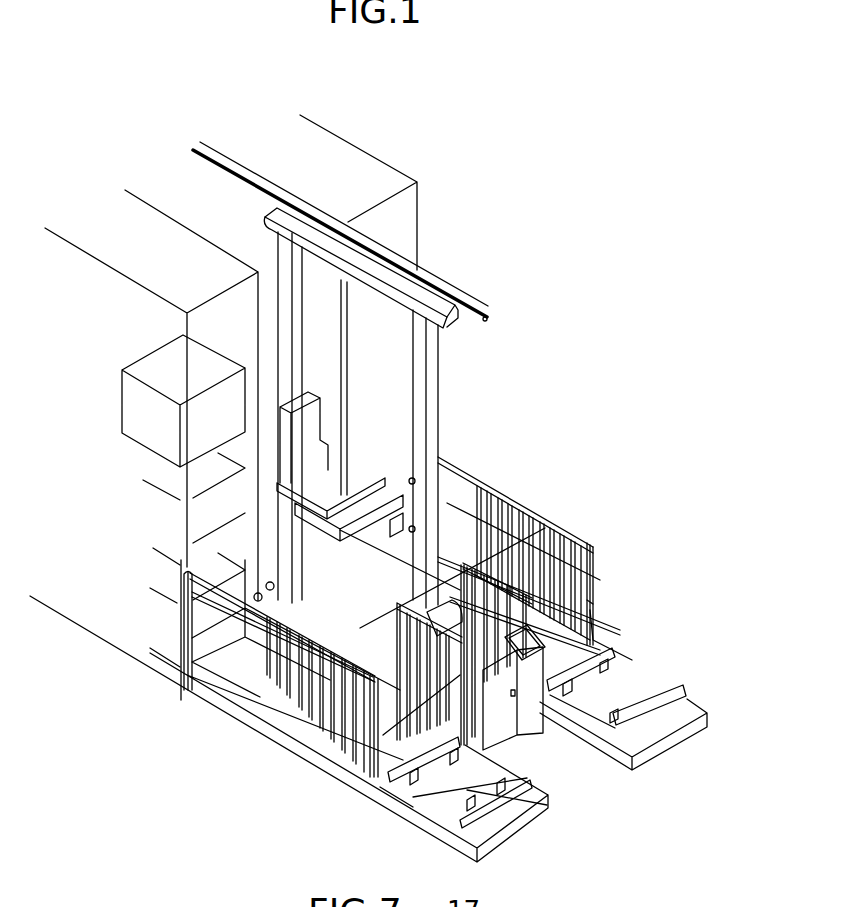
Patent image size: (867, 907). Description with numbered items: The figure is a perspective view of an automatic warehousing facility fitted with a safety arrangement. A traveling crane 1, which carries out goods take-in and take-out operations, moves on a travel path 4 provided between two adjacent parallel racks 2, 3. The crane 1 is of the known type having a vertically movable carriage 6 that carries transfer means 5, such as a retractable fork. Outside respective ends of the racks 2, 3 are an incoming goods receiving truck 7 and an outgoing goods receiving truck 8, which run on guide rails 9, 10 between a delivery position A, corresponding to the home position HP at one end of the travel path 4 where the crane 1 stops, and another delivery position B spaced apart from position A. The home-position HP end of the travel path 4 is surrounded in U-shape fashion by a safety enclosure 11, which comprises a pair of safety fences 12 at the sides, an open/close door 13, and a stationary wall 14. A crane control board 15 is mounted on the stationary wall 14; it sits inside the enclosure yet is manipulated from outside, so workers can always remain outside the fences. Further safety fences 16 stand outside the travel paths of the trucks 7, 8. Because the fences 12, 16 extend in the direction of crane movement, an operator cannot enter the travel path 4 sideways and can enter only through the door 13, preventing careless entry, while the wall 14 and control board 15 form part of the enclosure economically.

The traveling crane 1 is at (449, 398).
The rack 2 is at (110, 242).
The rack 3 is at (350, 165).
The travel path 4 is at (213, 202).
The transfer means 5 is at (373, 467).
The vertically movable carriage 6 is at (318, 497).
The incoming goods receiving truck 7 is at (443, 800).
The outgoing goods receiving truck 8 is at (625, 692).
The guide rail 9 is at (400, 732).
The guide rail 10 is at (590, 630).
The safety enclosure 11 is at (590, 563).
The safety fence 12 is at (485, 555).
The open/close door 13 is at (500, 733).
The stationary wall 14 is at (523, 730).
The crane control board 15 is at (590, 610).
The safety fence 16 is at (555, 525).
The home position HP is at (447, 499).
The delivery position A is at (250, 668).
The delivery position B is at (618, 698).